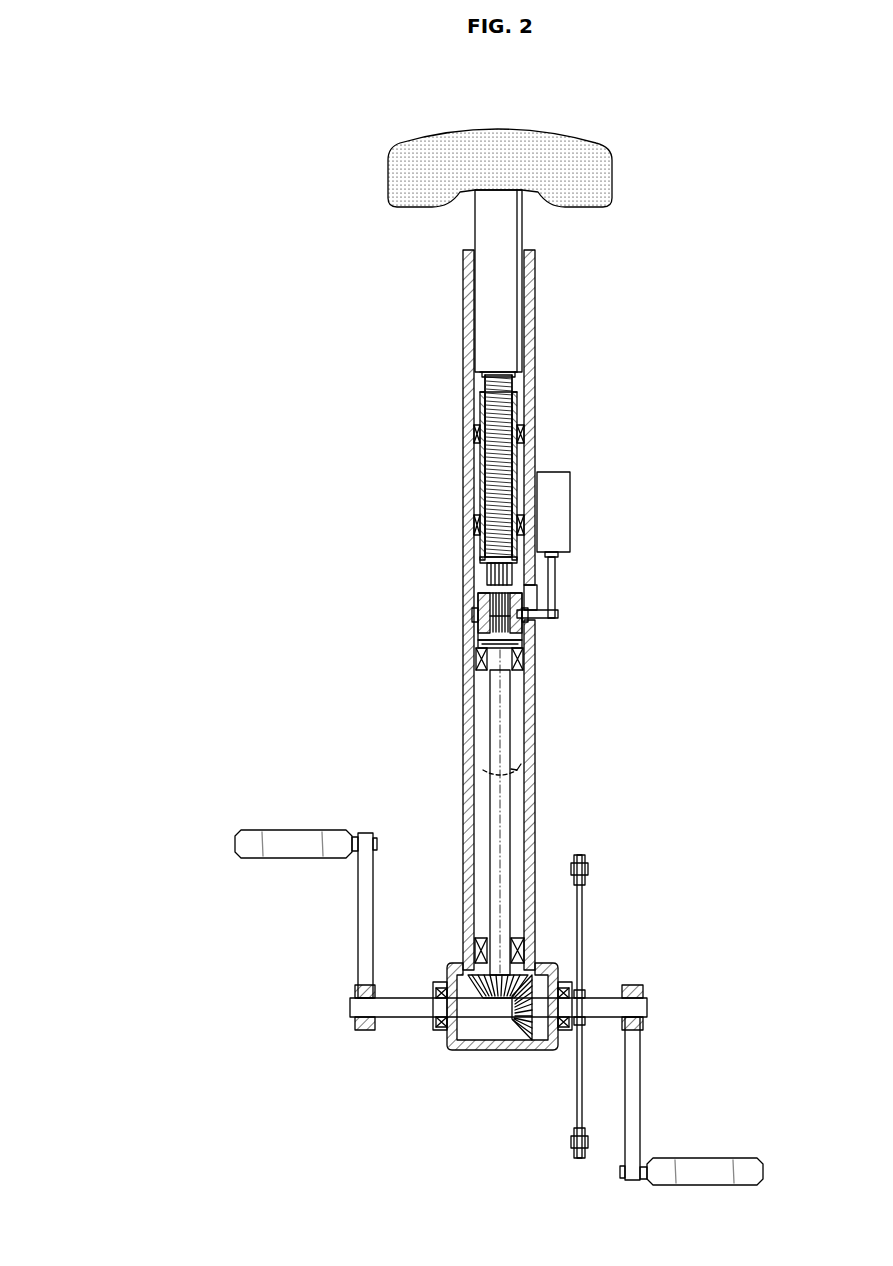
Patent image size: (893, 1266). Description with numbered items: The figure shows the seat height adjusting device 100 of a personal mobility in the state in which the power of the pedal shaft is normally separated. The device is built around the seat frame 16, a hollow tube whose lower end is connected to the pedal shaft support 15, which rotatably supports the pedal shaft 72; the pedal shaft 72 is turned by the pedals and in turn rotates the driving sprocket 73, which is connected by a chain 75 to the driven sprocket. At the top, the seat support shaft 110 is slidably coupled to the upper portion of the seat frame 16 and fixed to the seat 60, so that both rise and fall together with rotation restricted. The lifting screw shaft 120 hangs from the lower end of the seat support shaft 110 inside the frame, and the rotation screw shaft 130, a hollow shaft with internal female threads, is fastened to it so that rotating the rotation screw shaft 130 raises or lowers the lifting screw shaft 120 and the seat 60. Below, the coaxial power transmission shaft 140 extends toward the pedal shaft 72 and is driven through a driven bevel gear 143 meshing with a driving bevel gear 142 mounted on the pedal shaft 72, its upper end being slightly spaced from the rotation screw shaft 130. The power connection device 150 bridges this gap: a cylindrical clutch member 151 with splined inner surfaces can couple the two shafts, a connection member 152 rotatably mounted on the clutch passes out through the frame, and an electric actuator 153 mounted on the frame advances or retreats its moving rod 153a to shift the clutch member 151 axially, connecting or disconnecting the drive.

The seat 60 is at (436, 152).
The seat support shaft 110 is at (512, 286).
The seat height adjusting device 100 is at (454, 610).
The seat frame 16 is at (466, 568).
The lifting screw shaft 120 is at (505, 413).
The rotation screw shaft 130 is at (516, 482).
The electric actuator 153 is at (565, 510).
The moving rod 153a is at (554, 575).
The power connection device 150 is at (564, 575).
The connection member 152 is at (548, 620).
The clutch member 151 is at (530, 632).
The power transmission shaft 140 is at (500, 722).
The pedal shaft support 15 is at (452, 963).
The driven bevel gear 143 is at (487, 1000).
The driving bevel gear 142 is at (520, 1035).
The pedal shaft 72 is at (398, 1012).
The driving sprocket 73 is at (583, 927).
The chain 75 is at (585, 857).